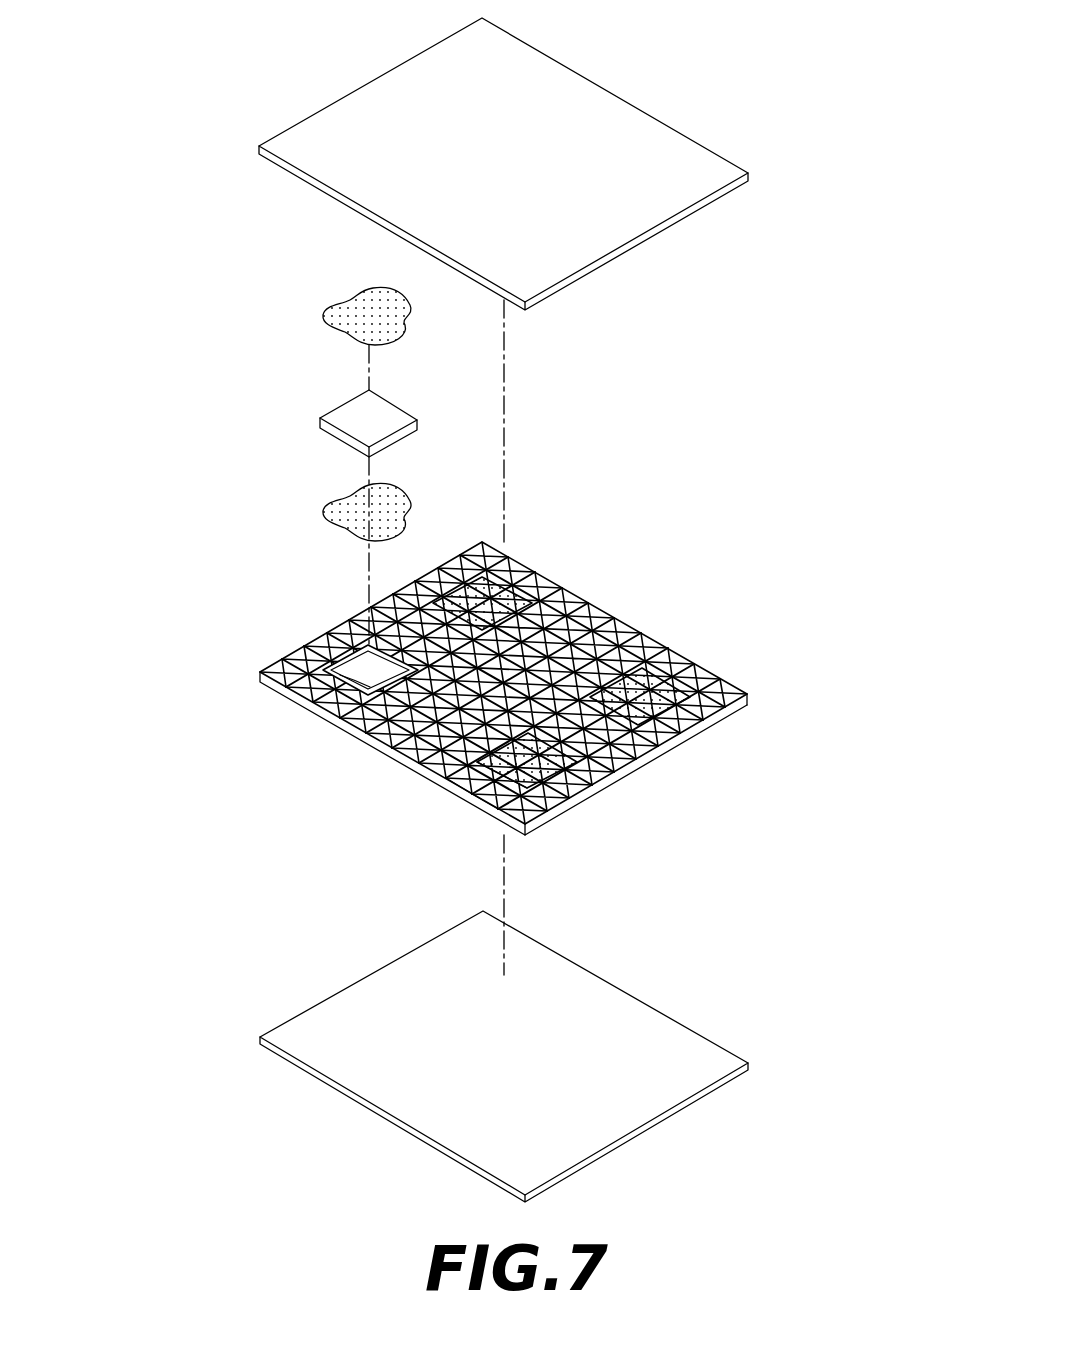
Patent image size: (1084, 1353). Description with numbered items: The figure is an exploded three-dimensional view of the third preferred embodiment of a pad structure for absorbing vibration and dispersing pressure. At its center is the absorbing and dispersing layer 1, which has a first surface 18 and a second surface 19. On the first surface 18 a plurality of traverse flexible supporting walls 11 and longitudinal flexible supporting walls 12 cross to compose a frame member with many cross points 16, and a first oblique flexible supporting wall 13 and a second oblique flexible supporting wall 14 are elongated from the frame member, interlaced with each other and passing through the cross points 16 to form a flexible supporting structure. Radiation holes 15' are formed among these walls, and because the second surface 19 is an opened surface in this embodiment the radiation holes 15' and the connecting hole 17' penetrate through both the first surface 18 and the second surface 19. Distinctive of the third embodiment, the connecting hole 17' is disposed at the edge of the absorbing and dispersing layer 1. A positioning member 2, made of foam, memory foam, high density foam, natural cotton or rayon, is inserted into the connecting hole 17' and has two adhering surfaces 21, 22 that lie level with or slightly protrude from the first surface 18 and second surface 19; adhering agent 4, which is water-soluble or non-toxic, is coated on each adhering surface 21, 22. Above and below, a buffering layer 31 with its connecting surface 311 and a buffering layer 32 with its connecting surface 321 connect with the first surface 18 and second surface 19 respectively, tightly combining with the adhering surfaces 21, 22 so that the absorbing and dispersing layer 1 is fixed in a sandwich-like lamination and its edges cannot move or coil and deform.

The absorbing and dispersing layer 1 is at (504, 710).
The positioning member 2 is at (360, 411).
The adhering agent 4 is at (355, 315).
The traverse flexible supporting wall 11 is at (713, 685).
The longitudinal flexible supporting wall 12 is at (742, 707).
The first oblique flexible supporting wall 13 is at (542, 803).
The second oblique flexible supporting wall 14 is at (502, 805).
The radiation hole 15' is at (428, 804).
The cross point 16 is at (307, 731).
The connecting hole 17' is at (302, 723).
The first surface 18 is at (733, 687).
The second surface 19 is at (713, 727).
The adhering surface 21 is at (393, 415).
The adhering surface 22 is at (338, 445).
The buffering layer 31 is at (515, 164).
The connecting surface 311 is at (698, 212).
The buffering layer 32 is at (515, 1056).
The connecting surface 321 is at (698, 1105).